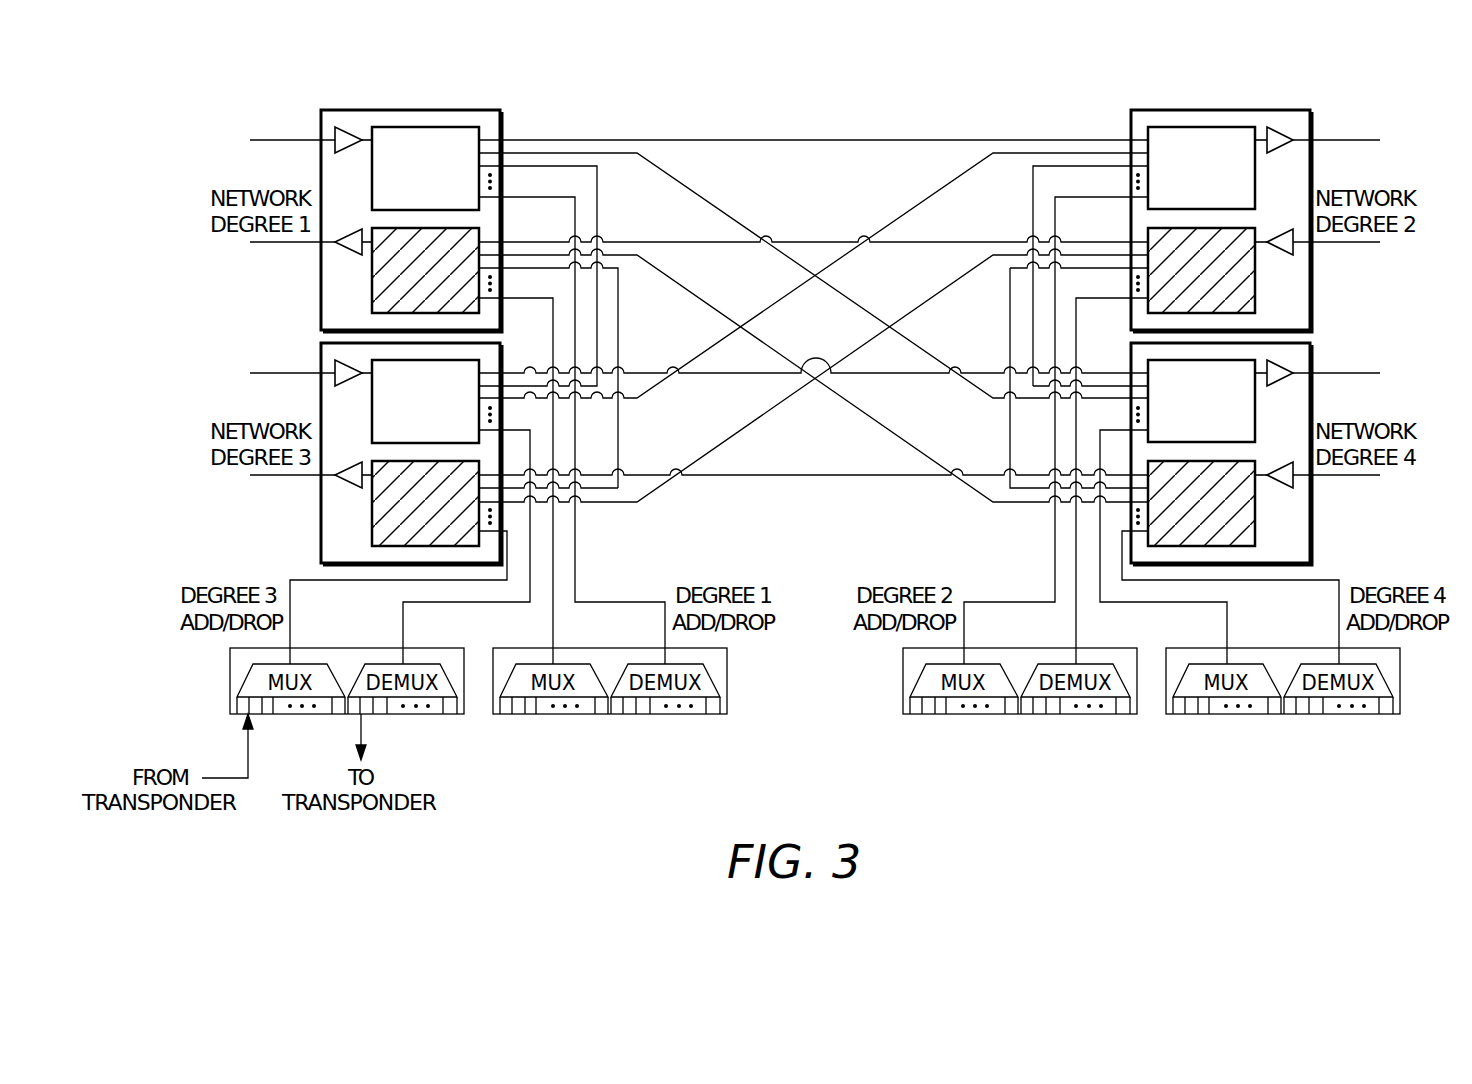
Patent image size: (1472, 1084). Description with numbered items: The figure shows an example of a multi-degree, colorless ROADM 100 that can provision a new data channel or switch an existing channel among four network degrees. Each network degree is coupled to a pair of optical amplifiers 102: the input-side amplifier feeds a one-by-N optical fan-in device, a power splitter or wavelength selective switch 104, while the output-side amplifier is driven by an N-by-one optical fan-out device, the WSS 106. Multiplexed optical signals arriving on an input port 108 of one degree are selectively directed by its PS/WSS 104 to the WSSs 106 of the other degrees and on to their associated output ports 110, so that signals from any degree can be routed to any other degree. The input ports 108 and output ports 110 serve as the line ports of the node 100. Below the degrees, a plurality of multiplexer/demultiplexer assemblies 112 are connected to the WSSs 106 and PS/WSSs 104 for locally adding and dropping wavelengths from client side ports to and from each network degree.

The ROADM 100 is at (1395, 81).
The optical amplifier 102 is at (338, 133).
The power splitter or wavelength selective switch 104 is at (372, 172).
The wavelength selective switch 106 is at (372, 296).
The input port 108 is at (260, 371).
The output port 110 is at (250, 491).
The multiplexer/demultiplexer assembly 112 is at (453, 715).